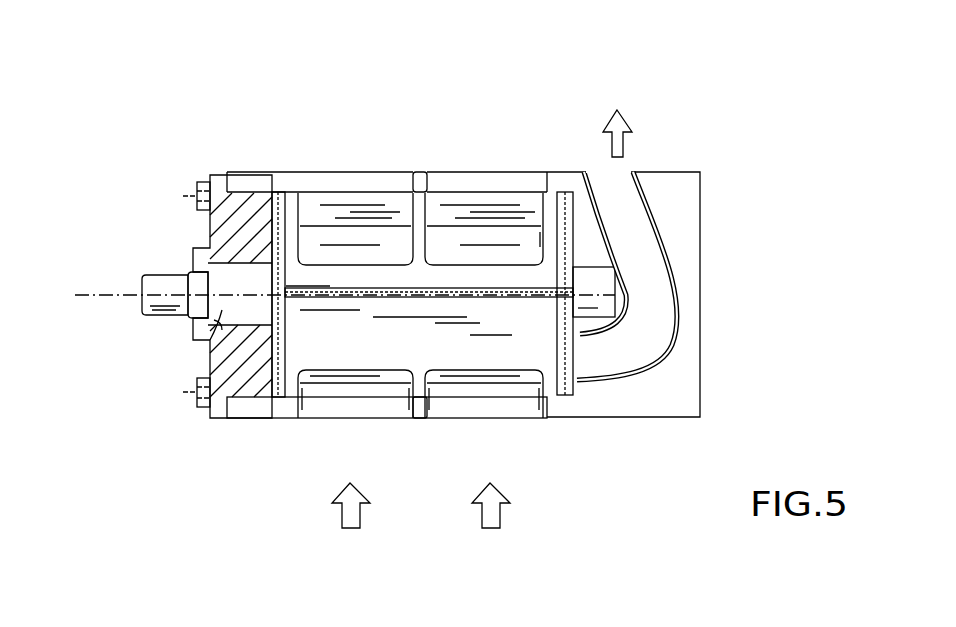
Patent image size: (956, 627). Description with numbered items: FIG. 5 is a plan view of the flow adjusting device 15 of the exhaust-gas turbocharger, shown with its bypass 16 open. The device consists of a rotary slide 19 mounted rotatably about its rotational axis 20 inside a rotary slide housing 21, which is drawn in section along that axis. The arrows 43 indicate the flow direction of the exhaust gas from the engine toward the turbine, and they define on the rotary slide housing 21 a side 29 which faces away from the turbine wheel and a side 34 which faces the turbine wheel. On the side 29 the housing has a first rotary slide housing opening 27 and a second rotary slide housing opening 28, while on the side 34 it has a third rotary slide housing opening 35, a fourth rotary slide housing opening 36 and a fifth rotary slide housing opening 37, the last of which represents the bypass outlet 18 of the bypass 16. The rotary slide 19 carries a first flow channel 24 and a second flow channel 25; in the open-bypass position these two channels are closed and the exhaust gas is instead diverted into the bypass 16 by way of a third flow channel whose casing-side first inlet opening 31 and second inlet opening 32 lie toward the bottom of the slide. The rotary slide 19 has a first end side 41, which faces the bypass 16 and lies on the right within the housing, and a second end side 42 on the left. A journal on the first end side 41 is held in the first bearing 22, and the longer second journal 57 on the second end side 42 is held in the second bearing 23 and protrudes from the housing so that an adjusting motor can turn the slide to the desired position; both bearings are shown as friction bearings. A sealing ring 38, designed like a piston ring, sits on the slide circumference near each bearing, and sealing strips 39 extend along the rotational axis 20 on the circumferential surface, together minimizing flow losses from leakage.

The flow adjusting device 15 is at (706, 70).
The bypass 16 is at (607, 188).
The bypass outlet 18 is at (628, 170).
The rotary slide 19 is at (455, 277).
The rotational axis 20 is at (85, 300).
The rotary slide housing 21 is at (653, 423).
The first bearing 22 is at (607, 278).
The second bearing 23 is at (222, 318).
The first flow channel 24 is at (355, 245).
The second flow channel 25 is at (488, 240).
The first rotary slide housing opening 27 is at (357, 408).
The second rotary slide housing opening 28 is at (492, 408).
The side which faces away from the turbine wheel 29 is at (237, 420).
The first inlet opening 31 is at (337, 382).
The second inlet opening 32 is at (460, 382).
The side which faces the turbine wheel 34 is at (398, 172).
The third rotary slide housing opening 35 is at (340, 180).
The fourth rotary slide housing opening 36 is at (482, 182).
The fifth rotary slide housing opening 37 is at (588, 172).
The sealing ring 38 is at (262, 172).
The sealing strips 39 is at (320, 287).
The first end side 41 is at (577, 243).
The second end side 42 is at (262, 237).
The arrows 43 is at (632, 122).
The second journal 57 is at (150, 275).